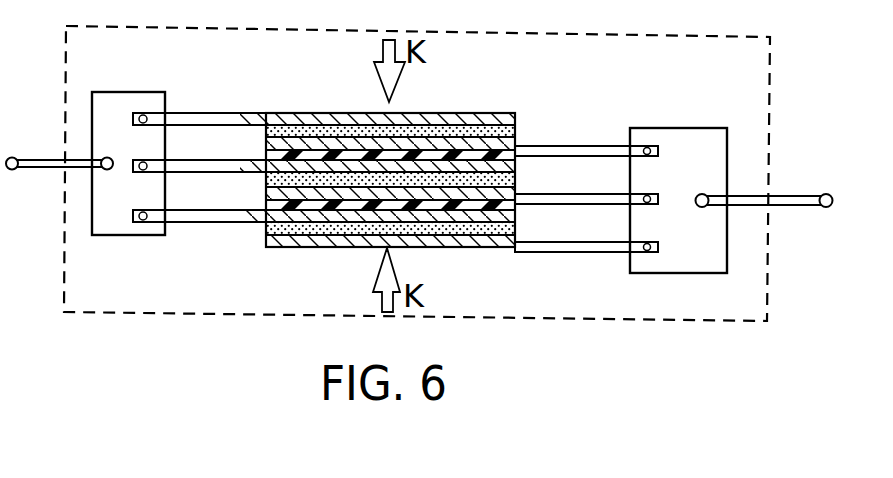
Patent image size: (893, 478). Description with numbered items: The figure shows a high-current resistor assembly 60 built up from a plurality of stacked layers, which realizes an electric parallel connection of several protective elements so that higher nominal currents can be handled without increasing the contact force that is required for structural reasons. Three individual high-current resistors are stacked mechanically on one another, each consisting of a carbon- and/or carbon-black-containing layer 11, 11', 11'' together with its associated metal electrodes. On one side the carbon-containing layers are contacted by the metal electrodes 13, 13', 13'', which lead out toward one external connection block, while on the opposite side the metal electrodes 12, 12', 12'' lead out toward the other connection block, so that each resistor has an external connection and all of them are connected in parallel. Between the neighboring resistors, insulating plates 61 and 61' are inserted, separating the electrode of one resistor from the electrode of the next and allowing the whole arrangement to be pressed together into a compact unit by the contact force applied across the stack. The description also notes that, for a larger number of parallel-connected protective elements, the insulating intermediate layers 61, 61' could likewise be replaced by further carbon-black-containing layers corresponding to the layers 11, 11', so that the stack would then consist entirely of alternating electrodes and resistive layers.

The piezoelectric actuator assembly 60 is at (776, 118).
The metal electrode 13 is at (318, 83).
The metal electrode 13' is at (308, 225).
The metal electrode 13'' is at (324, 261).
The carbon- and/or carbon-black-containing layer 11 is at (359, 89).
The carbon- and/or carbon-black-containing layer 11' is at (390, 100).
The carbon- and/or carbon-black-containing layer 11'' is at (392, 127).
The metal electrode 12 is at (583, 118).
The metal electrode 12' is at (581, 249).
The metal electrode 12'' is at (586, 276).
The insulating plate 61 is at (386, 225).
The insulating plate 61' is at (390, 250).